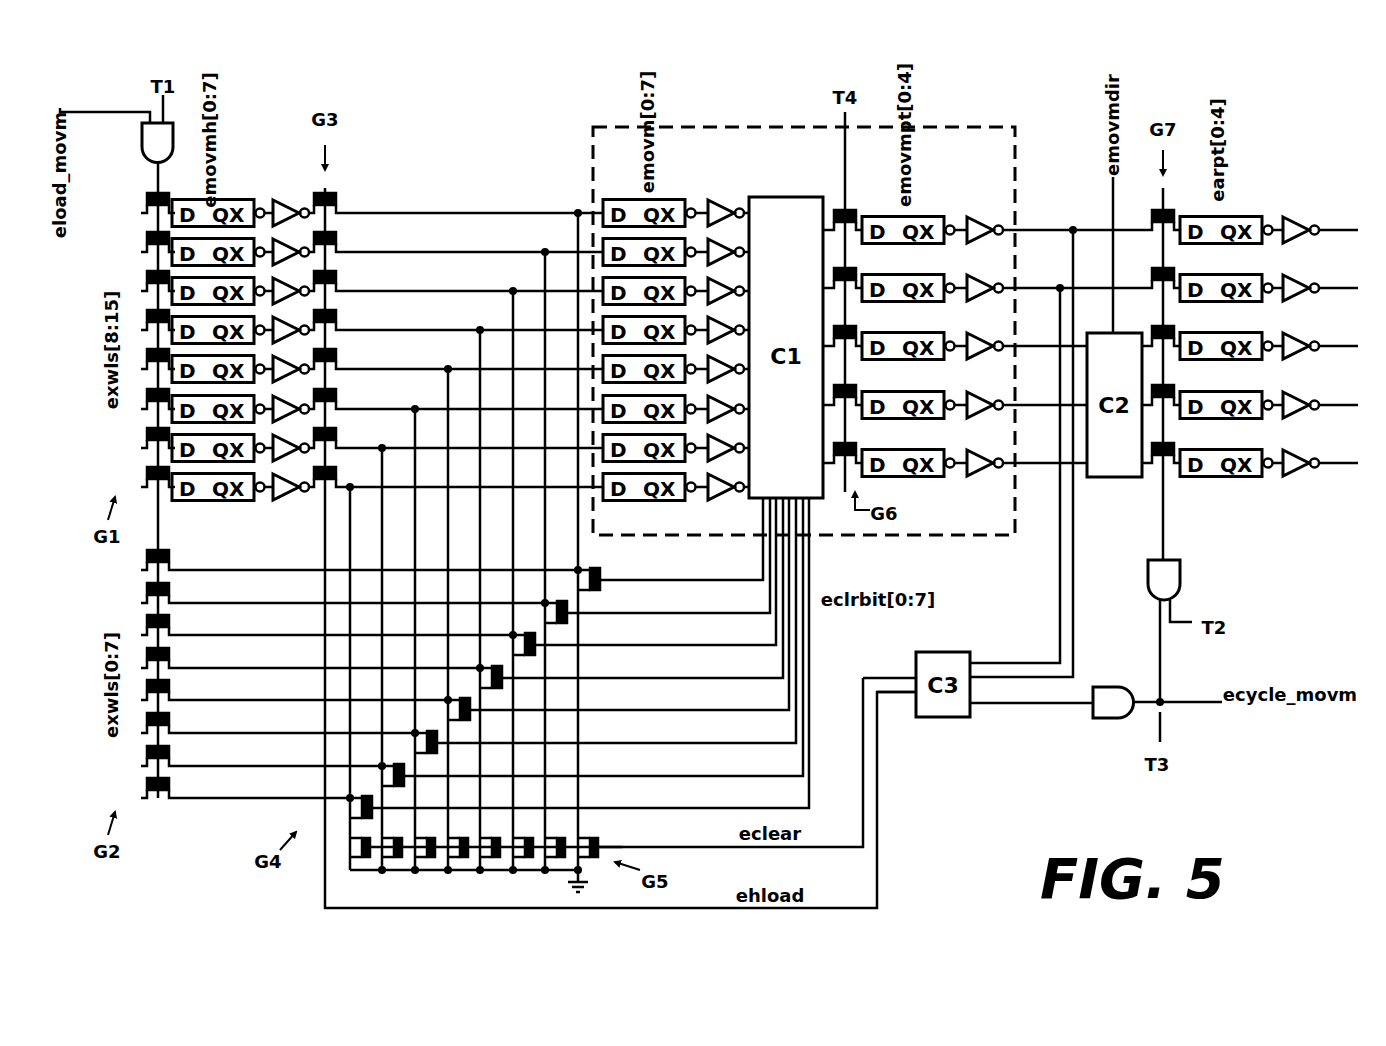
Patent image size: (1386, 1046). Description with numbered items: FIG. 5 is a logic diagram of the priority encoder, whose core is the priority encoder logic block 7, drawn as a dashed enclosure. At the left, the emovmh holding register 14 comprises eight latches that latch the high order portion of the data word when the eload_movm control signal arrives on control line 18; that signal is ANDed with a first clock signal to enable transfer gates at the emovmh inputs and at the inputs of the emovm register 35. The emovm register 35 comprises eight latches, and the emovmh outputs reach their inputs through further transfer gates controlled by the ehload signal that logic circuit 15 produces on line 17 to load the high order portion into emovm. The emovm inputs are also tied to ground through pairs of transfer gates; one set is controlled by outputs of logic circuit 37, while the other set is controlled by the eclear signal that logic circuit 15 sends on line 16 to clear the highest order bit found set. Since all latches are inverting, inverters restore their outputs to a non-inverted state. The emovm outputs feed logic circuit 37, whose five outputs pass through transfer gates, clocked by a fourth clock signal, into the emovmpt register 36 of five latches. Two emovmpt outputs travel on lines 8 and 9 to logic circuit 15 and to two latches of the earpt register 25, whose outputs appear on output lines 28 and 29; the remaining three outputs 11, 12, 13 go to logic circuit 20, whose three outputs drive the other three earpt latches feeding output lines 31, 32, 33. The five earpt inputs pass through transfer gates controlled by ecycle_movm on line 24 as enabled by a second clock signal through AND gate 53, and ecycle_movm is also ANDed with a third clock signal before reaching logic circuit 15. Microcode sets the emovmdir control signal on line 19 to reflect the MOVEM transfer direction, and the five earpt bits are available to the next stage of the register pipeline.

The priority encoder logic block 7 is at (988, 537).
The line 8 is at (1037, 284).
The line 9 is at (1040, 226).
The output of emovmpt latches 11 is at (1037, 342).
The output of emovmpt latches 12 is at (1037, 401).
The output of emovmpt latches 13 is at (1037, 459).
The holding register emovmh 14 is at (247, 170).
The logic circuit 15 is at (952, 720).
The eclear line 16 is at (887, 676).
The ehload line 17 is at (877, 812).
The control line 18 is at (152, 178).
The emovmdir control line 19 is at (1112, 207).
The logic circuit 20 is at (1113, 478).
The ecycle_movm line 24 is at (1185, 705).
The earpt register 25 is at (1250, 200).
The output line 28 is at (1340, 283).
The output line 29 is at (1340, 225).
The output line 31 is at (1340, 341).
The output line 32 is at (1340, 400).
The output line 33 is at (1340, 459).
The emovm register 35 is at (676, 185).
The emovmpt register 36 is at (932, 200).
The logic circuit 37 is at (789, 196).
The AND gate 53 is at (1182, 574).